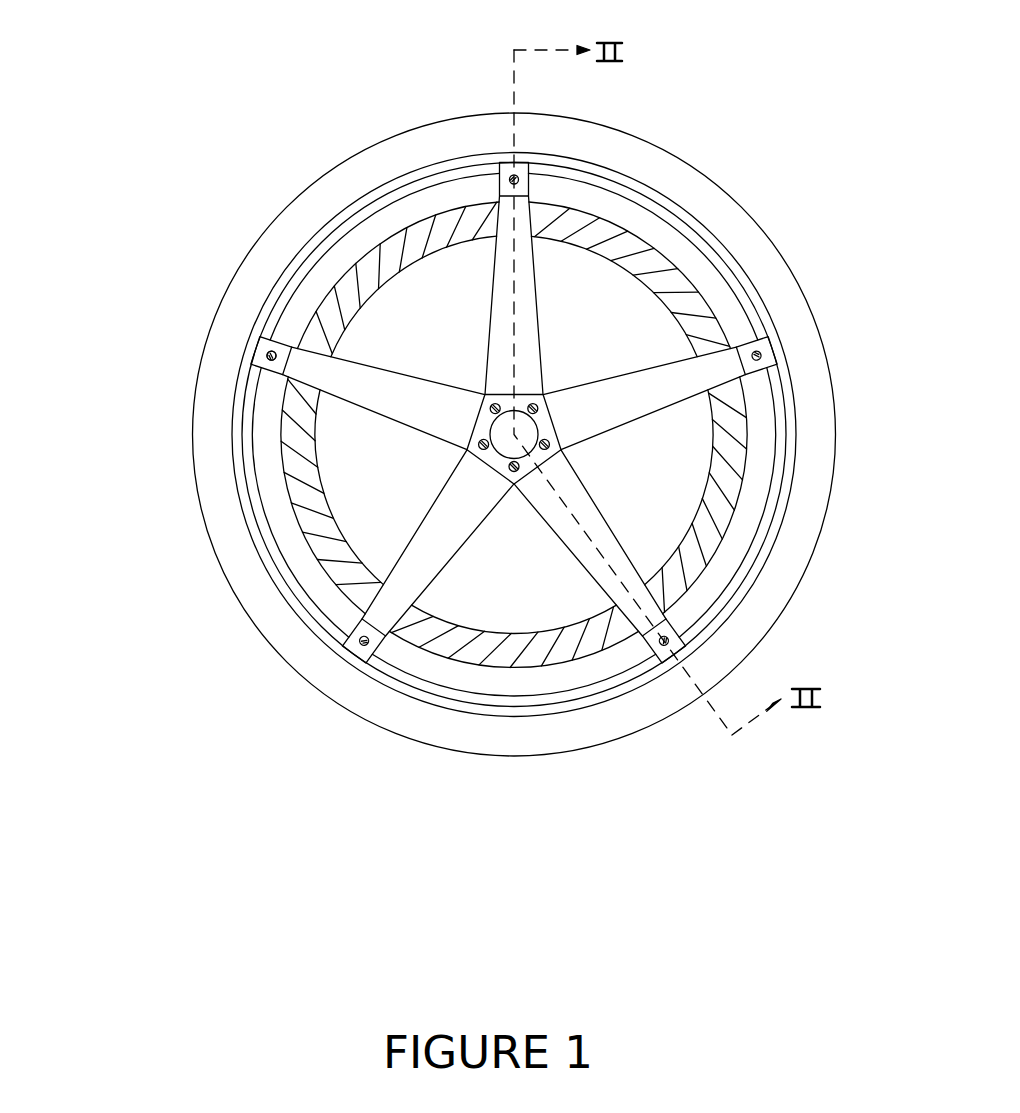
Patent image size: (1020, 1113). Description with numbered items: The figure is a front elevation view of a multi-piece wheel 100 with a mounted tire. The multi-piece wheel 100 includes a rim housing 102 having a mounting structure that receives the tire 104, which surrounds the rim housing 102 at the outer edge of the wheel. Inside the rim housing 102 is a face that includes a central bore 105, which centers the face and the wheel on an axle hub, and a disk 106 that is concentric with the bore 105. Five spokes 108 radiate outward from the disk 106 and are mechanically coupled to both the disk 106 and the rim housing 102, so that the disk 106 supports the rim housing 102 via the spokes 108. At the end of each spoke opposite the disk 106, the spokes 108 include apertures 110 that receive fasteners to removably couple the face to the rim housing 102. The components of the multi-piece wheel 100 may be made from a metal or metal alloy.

The multi-piece wheel 100 is at (329, 74).
The rim housing 102 is at (760, 503).
The tire 104 is at (292, 237).
The bore 105 is at (473, 435).
The disk 106 is at (492, 423).
The spokes 108 is at (514, 262).
The apertures 110 is at (266, 352).